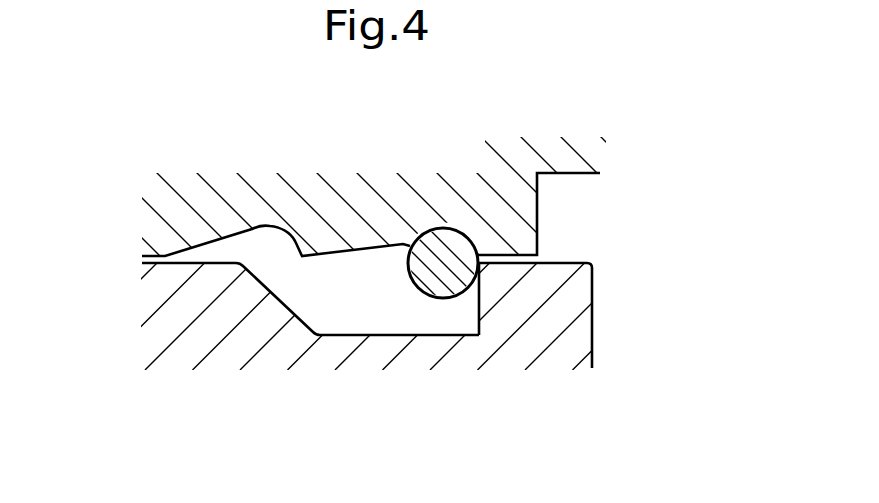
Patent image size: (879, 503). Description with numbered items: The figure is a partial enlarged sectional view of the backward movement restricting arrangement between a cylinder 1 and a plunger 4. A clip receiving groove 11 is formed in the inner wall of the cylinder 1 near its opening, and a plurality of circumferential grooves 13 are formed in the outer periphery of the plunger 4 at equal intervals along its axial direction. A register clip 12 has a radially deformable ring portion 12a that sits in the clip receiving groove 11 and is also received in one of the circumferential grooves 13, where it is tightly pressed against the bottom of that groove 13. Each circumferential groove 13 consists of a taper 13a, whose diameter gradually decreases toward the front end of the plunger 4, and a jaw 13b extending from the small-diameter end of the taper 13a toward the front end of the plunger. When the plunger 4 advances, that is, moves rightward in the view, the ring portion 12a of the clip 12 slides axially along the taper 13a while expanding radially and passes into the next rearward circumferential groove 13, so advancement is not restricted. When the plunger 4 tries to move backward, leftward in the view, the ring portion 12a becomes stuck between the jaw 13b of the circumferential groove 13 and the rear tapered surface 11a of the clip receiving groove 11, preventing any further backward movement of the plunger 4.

The cylinder 1 is at (163, 324).
The plunger 4 is at (187, 185).
The clip receiving groove 11 is at (420, 337).
The rear tapered surface 11a is at (254, 279).
The register clip 12 is at (477, 290).
The ring portion 12a is at (453, 283).
The circumferential groove 13 is at (252, 228).
The taper 13a is at (215, 240).
The jaw 13b is at (287, 243).